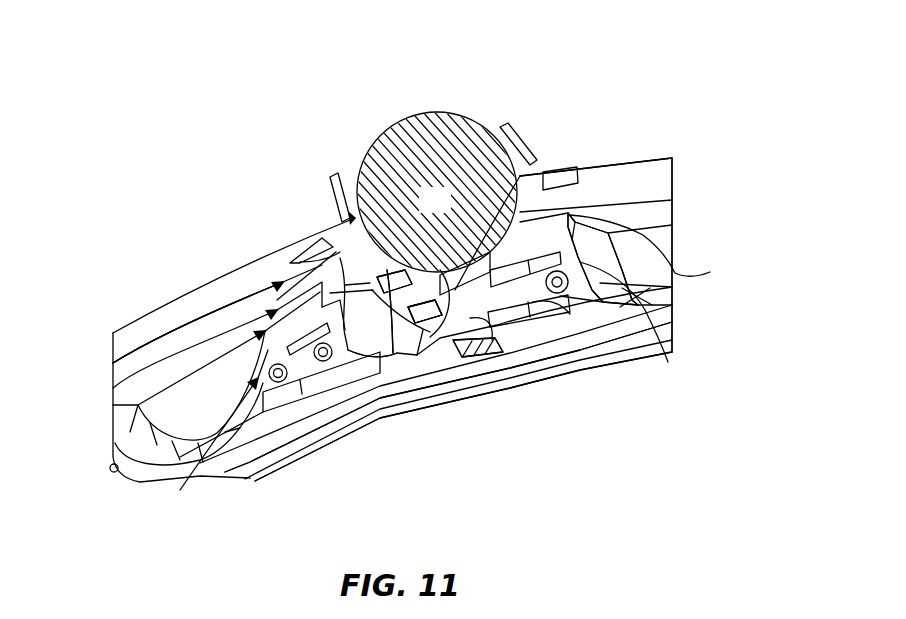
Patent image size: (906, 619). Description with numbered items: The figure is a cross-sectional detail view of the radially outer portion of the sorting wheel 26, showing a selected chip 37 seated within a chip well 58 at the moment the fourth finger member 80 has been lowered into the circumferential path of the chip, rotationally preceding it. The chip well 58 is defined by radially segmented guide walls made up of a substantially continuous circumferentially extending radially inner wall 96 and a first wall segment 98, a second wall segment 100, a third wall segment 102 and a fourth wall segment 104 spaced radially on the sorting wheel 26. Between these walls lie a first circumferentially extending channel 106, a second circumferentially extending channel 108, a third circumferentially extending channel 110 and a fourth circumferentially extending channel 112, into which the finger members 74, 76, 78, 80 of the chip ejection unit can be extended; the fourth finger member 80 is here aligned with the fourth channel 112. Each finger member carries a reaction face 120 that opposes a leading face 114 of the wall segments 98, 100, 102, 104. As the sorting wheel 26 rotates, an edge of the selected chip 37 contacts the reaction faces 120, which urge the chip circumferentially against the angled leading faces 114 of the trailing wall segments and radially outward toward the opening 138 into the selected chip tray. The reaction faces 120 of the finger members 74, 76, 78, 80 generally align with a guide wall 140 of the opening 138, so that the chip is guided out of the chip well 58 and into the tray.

The sorting wheel 26 is at (667, 121).
The selected chip 37 is at (449, 211).
The chip well 58 is at (185, 309).
The first finger member 74 is at (490, 354).
The second finger member 76 is at (413, 353).
The third finger member 78 is at (395, 360).
The fourth finger member 80 is at (360, 345).
The substantially continuous circumferentially extending radially inner wall 96 is at (533, 353).
The first wall segment 98 is at (570, 300).
The second wall segment 100 is at (673, 352).
The third wall segment 102 is at (710, 272).
The fourth wall segment 104 is at (553, 163).
The first circumferentially extending channel 106 is at (268, 417).
The second circumferentially extending channel 108 is at (214, 431).
The third circumferentially extending channel 110 is at (113, 457).
The fourth circumferentially extending channel 112 is at (113, 363).
The leading face 114 is at (541, 166).
The reaction face 120 is at (460, 290).
The opening 138 is at (290, 258).
The guide wall 140 is at (332, 177).